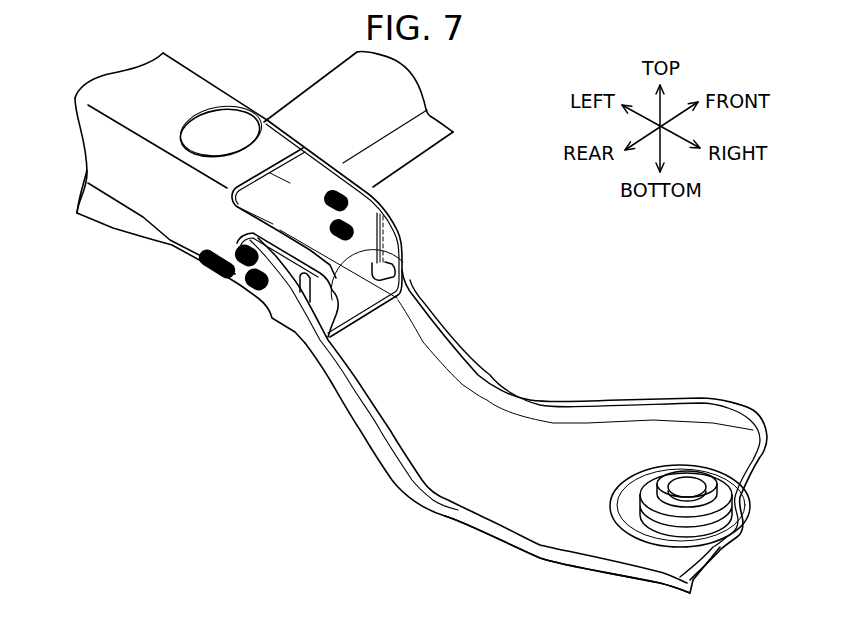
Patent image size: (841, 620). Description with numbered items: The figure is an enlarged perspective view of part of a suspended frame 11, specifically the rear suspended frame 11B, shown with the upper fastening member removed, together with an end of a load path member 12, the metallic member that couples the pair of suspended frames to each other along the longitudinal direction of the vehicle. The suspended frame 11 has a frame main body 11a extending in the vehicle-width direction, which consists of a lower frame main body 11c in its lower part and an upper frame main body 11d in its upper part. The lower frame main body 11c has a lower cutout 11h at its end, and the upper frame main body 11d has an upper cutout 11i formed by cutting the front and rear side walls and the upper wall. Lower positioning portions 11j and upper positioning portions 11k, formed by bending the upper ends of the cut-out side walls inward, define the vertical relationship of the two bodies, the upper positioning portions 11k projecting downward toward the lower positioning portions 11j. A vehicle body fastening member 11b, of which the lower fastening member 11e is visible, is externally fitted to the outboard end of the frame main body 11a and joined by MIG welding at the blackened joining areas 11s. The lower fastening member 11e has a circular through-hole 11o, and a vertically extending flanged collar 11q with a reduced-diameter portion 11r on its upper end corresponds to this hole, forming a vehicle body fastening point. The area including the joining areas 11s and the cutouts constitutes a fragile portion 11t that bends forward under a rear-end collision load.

The load path member 12 is at (400, 93).
The suspended frame 11 is at (409, 333).
The rear suspended frame 11B is at (409, 333).
The frame main body 11a is at (164, 256).
The lower frame main body 11c is at (172, 242).
The upper frame main body 11d is at (160, 195).
The lower cutout 11h is at (380, 200).
The upper cutout 11i is at (372, 167).
The lower positioning portion 11j is at (335, 300).
The upper positioning portion 11k is at (393, 258).
The joining area 11s is at (328, 228).
The fragile portion 11t is at (279, 231).
The lower fastening member 11e is at (567, 554).
The vehicle body fastening member 11b is at (490, 533).
The flanged collar 11q is at (724, 418).
The through-hole 11o is at (685, 490).
The reduced-diameter portion 11r is at (718, 507).